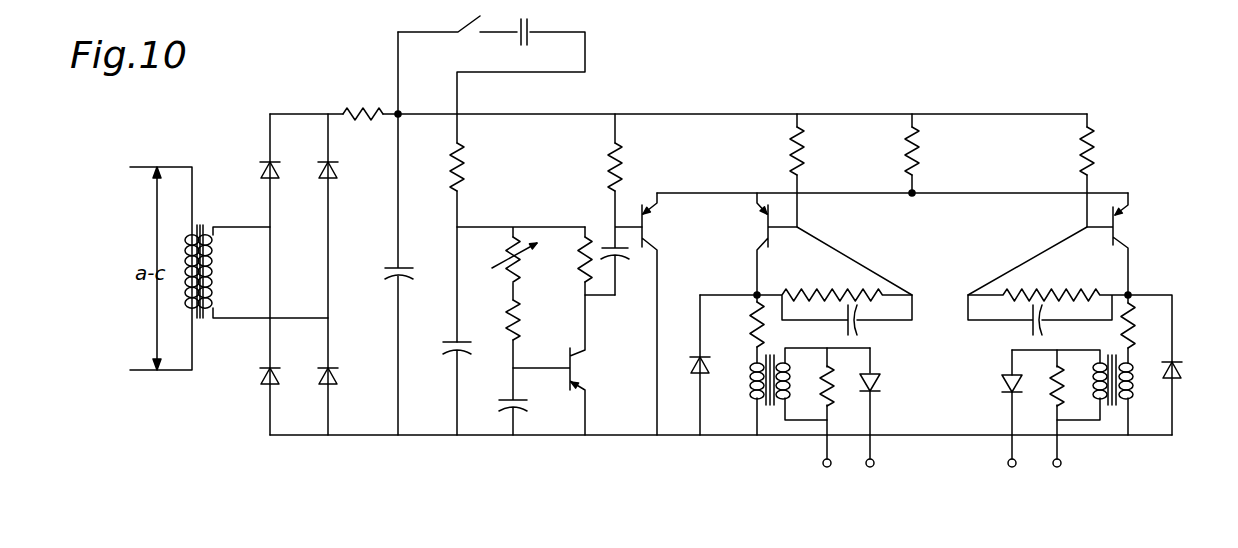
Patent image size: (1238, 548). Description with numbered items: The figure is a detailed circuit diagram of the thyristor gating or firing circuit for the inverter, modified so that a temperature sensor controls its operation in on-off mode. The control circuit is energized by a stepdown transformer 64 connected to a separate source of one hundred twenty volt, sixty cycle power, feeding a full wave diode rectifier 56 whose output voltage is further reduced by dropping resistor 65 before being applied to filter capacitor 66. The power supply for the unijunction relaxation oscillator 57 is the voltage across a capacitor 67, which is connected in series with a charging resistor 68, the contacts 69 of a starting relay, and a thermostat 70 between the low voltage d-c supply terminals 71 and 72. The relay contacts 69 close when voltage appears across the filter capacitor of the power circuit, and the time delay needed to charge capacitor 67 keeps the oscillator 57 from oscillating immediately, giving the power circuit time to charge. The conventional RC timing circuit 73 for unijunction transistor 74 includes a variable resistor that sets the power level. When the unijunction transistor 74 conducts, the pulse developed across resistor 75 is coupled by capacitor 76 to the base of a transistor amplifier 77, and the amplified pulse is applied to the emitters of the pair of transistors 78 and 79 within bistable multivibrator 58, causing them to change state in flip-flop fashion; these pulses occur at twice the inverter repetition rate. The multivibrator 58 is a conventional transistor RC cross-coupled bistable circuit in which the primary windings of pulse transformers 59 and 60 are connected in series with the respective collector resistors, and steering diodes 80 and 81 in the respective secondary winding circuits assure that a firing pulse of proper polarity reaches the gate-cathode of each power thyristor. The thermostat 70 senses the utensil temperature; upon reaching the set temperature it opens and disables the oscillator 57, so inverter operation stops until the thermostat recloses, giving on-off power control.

The full wave diode rectifier 56 is at (279, 442).
The unijunction relaxation oscillator 57 is at (490, 442).
The bistable multivibrator 58 is at (745, 445).
The pulse transformer 59 is at (772, 353).
The pulse transformer 60 is at (1110, 352).
The stepdown transformer 64 is at (200, 225).
The dropping resistor 65 is at (365, 110).
The filter capacitor 66 is at (384, 272).
The capacitor 67 is at (455, 352).
The charging resistor 68 is at (464, 170).
The contacts of starting relay 69 is at (532, 27).
The thermostat 70 is at (460, 29).
The low voltage d-c supply terminal 71 is at (432, 112).
The low voltage d-c supply terminal 72 is at (443, 436).
The RC timing circuit 73 is at (520, 308).
The unijunction transistor 74 is at (586, 370).
The resistor 75 is at (588, 268).
The capacitor 76 is at (621, 256).
The transistor amplifier 77 is at (634, 208).
The transistor 78 is at (757, 231).
The transistor 79 is at (1128, 222).
The steering diode 80 is at (875, 382).
The steering diode 81 is at (1006, 373).